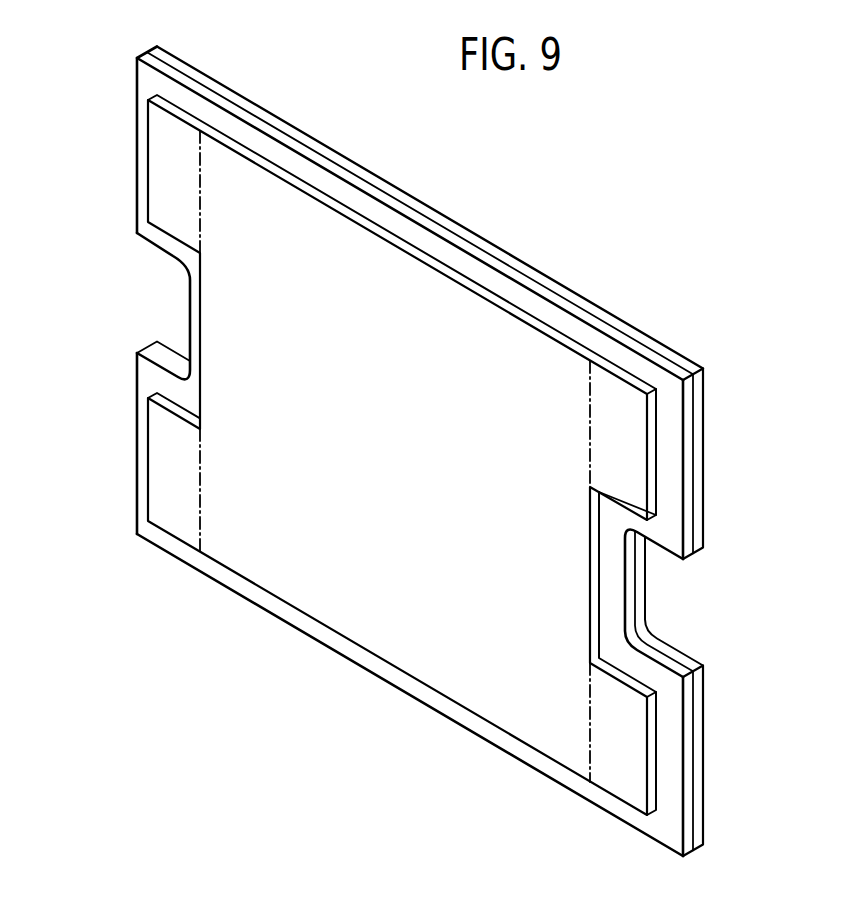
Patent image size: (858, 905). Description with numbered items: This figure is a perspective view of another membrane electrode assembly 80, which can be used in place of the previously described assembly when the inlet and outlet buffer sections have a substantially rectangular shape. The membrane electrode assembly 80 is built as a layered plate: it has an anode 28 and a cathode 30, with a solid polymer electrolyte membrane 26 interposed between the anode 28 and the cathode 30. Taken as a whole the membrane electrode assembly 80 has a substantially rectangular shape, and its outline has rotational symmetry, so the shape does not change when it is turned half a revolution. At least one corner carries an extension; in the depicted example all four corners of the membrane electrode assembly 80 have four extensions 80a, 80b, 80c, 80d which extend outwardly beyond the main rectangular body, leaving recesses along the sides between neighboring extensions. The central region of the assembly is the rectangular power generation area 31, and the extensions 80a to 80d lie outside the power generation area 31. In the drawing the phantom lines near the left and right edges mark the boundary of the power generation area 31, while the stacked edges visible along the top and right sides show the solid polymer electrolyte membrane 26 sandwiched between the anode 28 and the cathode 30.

The membrane electrode assembly 80 is at (334, 43).
The solid polymer electrolyte membrane 26 is at (137, 83).
The anode 28 is at (156, 145).
The cathode 30 is at (190, 64).
The power generation area 31 is at (218, 484).
The extension 80a is at (137, 186).
The extension 80b is at (714, 683).
The extension 80c is at (704, 515).
The extension 80d is at (137, 368).